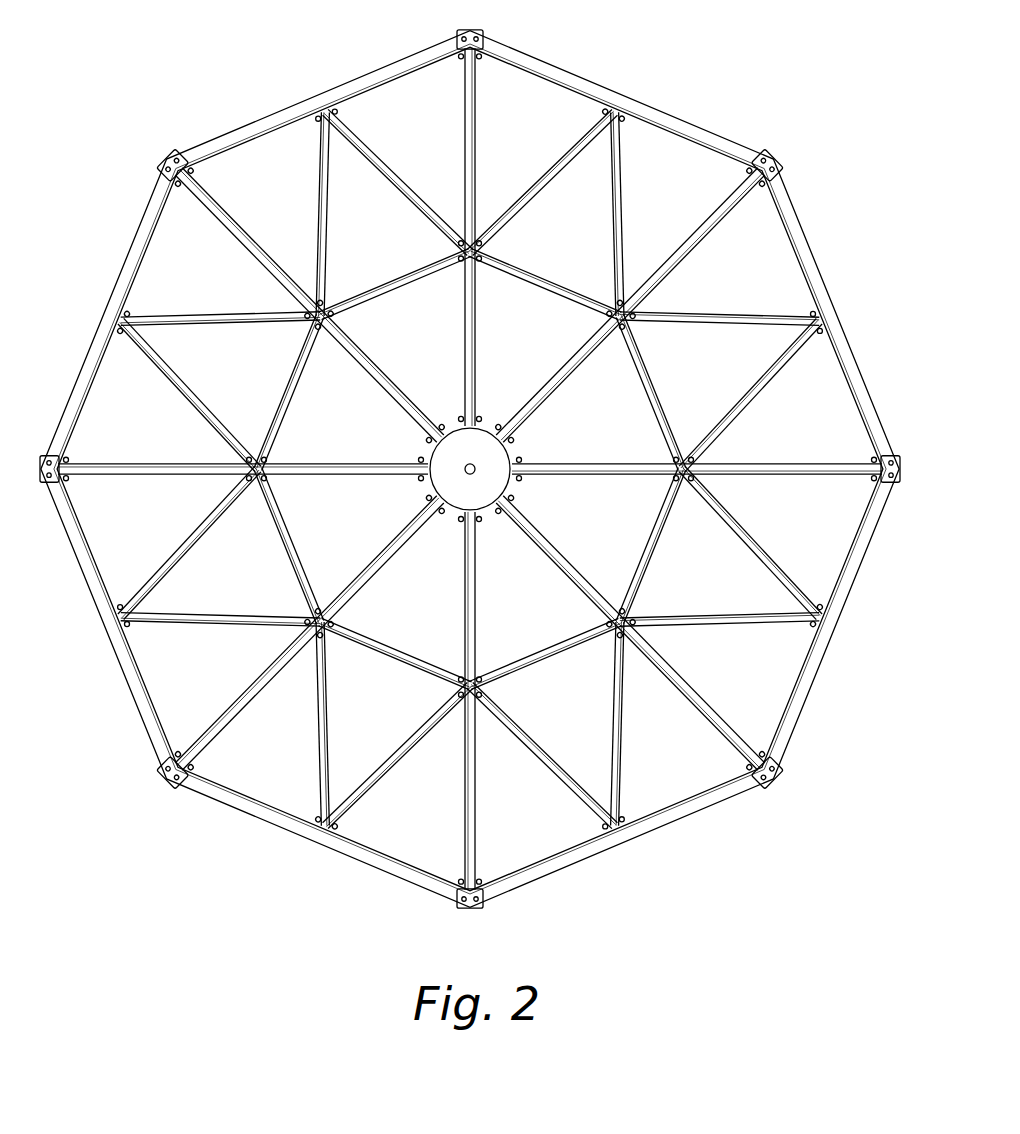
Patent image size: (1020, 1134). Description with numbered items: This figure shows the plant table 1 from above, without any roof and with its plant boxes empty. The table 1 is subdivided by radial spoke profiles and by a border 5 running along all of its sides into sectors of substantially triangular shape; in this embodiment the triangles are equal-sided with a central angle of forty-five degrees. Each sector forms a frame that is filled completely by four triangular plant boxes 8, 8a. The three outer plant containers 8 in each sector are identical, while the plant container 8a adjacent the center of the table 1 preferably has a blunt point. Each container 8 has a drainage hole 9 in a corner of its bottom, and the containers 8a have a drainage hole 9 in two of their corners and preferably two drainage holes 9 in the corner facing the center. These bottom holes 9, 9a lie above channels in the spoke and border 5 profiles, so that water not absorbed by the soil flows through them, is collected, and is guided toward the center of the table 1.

The table 1 is at (700, 103).
The border 5 is at (358, 82).
The plant box 8 is at (506, 155).
The plant box 8a is at (510, 356).
The drainage hole 9 is at (496, 56).
The bottom hole 9a is at (612, 104).